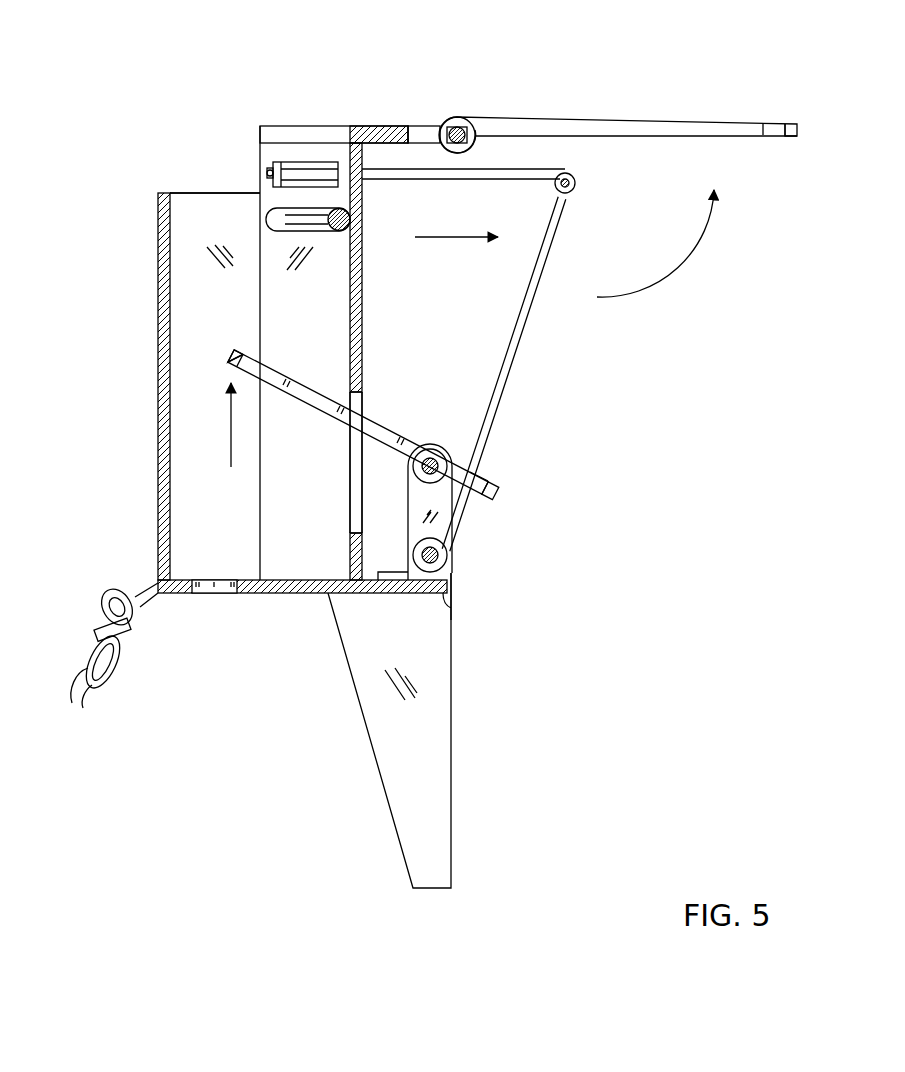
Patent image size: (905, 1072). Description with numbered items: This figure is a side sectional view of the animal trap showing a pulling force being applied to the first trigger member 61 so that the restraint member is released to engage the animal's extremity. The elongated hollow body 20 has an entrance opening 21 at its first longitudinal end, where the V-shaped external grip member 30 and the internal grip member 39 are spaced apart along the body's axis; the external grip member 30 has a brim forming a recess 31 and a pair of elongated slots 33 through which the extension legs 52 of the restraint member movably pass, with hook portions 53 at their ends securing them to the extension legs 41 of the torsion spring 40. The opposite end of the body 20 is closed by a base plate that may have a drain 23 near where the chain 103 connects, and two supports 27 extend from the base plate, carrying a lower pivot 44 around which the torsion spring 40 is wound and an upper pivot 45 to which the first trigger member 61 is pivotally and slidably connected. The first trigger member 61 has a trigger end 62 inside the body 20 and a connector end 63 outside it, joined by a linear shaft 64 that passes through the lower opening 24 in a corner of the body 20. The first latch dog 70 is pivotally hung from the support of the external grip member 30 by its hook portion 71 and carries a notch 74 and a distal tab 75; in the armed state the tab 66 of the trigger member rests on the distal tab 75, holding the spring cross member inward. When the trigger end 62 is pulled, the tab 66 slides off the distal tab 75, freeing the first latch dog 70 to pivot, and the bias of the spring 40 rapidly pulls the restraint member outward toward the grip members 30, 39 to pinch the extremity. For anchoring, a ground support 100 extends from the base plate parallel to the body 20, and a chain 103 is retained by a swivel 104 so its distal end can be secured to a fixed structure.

The hollow body 20 is at (158, 240).
The entrance opening 21 is at (205, 192).
The drain 23 is at (205, 593).
The lower opening 24 is at (355, 532).
The supports 27 is at (440, 500).
The external grip member 30 is at (300, 126).
The recess 31 is at (283, 152).
The elongated slots 33 is at (305, 162).
The internal grip member 39 is at (268, 220).
The torsion spring 40 is at (440, 560).
The extension legs 41 is at (528, 350).
The lower pivot 44 is at (445, 603).
The upper pivot 45 is at (430, 458).
The extension legs 52 is at (420, 178).
The hook portions 53 is at (578, 183).
The first trigger member 61 is at (292, 378).
The trigger end 62 is at (236, 348).
The connector end 63 is at (480, 477).
The shaft 64 is at (375, 455).
The tab 66 is at (500, 490).
The first latch dog 70 is at (570, 115).
The hook portion 71 is at (440, 128).
The notch 74 is at (770, 128).
The distal tab 75 is at (790, 136).
The ground support 100 is at (432, 805).
The chain 103 is at (108, 700).
The swivel 104 is at (130, 640).